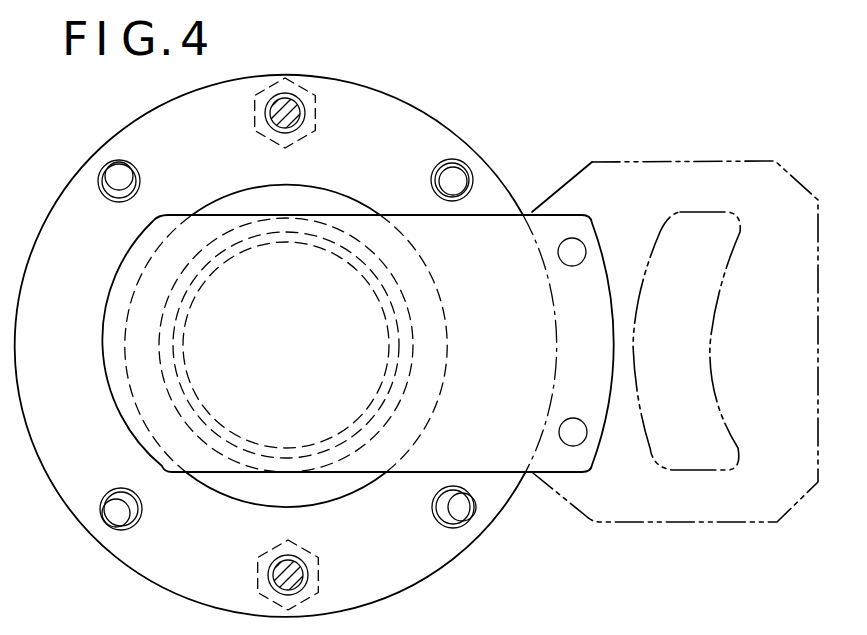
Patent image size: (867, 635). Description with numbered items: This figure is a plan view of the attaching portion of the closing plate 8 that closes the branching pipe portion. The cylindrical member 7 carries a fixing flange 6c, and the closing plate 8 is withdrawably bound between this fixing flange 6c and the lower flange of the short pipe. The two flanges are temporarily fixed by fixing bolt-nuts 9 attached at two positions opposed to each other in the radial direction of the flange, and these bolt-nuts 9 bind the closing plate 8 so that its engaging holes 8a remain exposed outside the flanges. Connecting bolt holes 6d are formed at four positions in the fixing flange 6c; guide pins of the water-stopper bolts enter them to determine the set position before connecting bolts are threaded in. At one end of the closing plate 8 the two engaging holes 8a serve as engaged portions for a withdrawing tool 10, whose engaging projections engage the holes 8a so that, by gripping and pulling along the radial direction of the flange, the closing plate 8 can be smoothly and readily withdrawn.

The fixing flange 6c is at (310, 346).
The cylindrical member 7 is at (456, 133).
The connecting bolt holes 6d is at (108, 176).
The fixing bolt-nuts 9 is at (268, 121).
The closing plate 8 is at (195, 463).
The engaging holes 8a is at (575, 418).
The withdrawing tool 10 is at (702, 524).